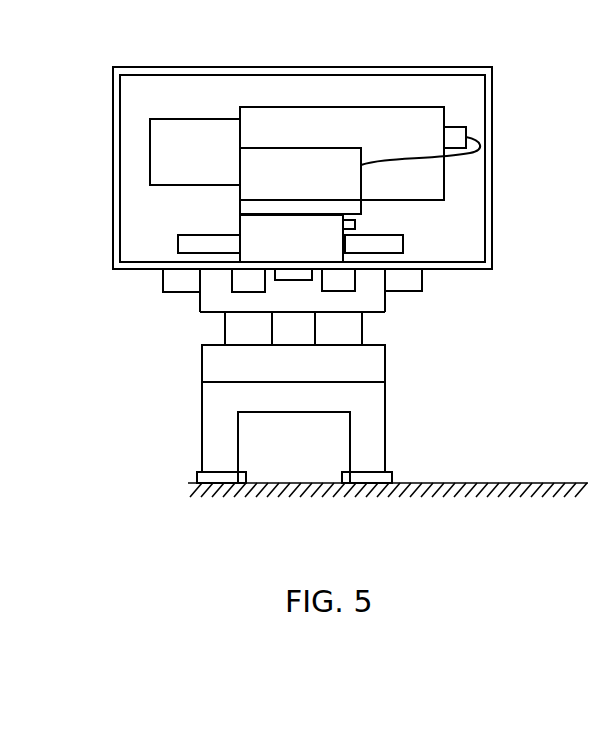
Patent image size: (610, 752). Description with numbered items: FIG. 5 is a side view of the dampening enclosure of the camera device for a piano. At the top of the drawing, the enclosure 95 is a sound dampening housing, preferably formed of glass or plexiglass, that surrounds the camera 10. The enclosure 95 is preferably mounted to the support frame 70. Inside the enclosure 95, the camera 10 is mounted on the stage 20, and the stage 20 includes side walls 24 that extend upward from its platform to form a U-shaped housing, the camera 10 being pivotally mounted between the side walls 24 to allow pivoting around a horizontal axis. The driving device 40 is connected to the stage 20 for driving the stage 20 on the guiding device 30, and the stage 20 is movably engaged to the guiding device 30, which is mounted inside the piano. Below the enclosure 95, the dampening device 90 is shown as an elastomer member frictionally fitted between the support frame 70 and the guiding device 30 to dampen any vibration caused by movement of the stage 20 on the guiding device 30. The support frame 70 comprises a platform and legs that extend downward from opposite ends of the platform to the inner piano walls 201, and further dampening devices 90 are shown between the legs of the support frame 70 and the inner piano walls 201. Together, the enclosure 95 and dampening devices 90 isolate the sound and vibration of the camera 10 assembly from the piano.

The enclosure 95 is at (357, 87).
The camera 10 is at (166, 138).
The side walls 24 is at (308, 203).
The driving device 40 is at (248, 229).
The stage 20 is at (176, 243).
The guiding device 30 is at (372, 303).
The dampening device 90 is at (225, 323).
The support frame 70 is at (360, 411).
The inner piano walls 201 is at (493, 487).